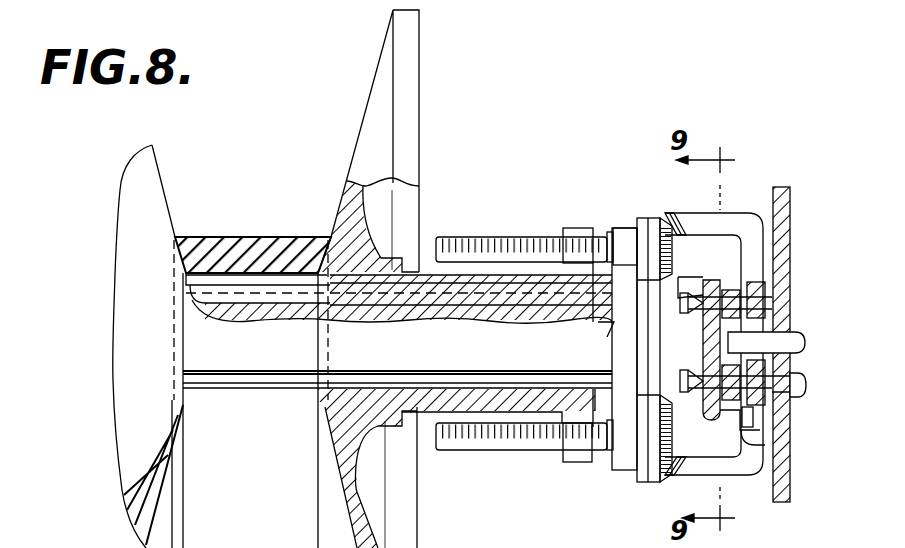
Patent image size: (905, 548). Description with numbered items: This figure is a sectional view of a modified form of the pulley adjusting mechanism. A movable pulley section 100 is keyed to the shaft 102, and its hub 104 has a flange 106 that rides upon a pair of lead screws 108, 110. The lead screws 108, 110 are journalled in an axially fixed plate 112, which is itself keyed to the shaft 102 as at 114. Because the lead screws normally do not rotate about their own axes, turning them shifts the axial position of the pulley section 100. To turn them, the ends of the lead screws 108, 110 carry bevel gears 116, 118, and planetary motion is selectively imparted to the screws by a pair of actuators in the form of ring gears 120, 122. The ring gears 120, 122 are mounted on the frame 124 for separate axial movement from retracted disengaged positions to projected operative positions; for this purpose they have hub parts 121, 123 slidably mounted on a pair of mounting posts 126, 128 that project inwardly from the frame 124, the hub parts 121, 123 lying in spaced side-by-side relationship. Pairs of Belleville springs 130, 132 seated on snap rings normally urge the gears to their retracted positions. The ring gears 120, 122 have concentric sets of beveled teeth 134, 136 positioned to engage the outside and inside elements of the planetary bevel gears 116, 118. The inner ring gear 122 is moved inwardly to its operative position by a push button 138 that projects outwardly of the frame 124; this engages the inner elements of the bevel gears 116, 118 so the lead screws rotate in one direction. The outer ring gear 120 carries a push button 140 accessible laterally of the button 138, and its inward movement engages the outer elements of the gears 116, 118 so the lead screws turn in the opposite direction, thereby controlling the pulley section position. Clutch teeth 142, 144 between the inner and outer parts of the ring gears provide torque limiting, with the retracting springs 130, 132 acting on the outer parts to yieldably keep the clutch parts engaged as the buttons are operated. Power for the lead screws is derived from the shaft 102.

The movable pulley section 100 is at (415, 95).
The shaft 102 is at (393, 324).
The hub 104 is at (435, 412).
The flange 106 is at (573, 462).
The lead screw 108 is at (481, 237).
The lead screw 110 is at (497, 450).
The axially fixed plate 112 is at (618, 228).
The key 114 is at (612, 330).
The bevel gear 116 is at (646, 220).
The bevel gear 118 is at (638, 472).
The ring gear 120 is at (738, 206).
The hub part 121 is at (762, 398).
The ring gear 122 is at (707, 435).
The hub part 123 is at (708, 350).
The frame 124 is at (790, 211).
The mounting post 126 is at (762, 300).
The mounting post 128 is at (765, 382).
The Belleville springs 130 is at (723, 420).
The Belleville springs 132 is at (646, 462).
The beveled teeth 134 is at (677, 214).
The beveled teeth 136 is at (680, 267).
The push button 138 is at (797, 334).
The push button 140 is at (797, 385).
The clutch teeth 142 is at (752, 415).
The clutch teeth 144 is at (735, 275).